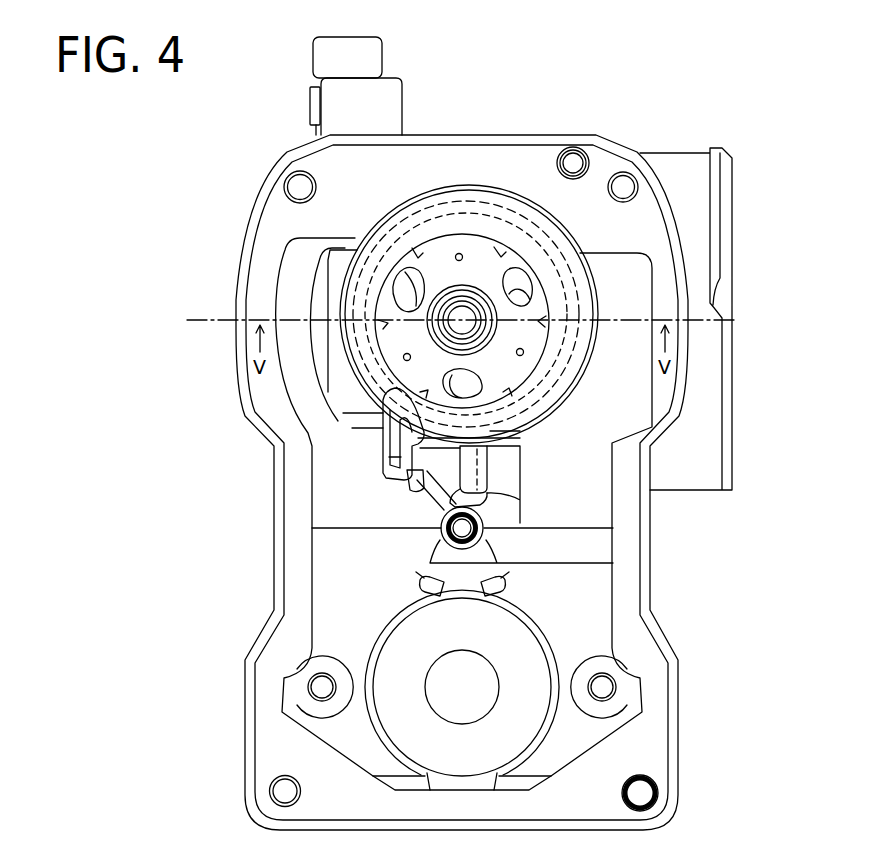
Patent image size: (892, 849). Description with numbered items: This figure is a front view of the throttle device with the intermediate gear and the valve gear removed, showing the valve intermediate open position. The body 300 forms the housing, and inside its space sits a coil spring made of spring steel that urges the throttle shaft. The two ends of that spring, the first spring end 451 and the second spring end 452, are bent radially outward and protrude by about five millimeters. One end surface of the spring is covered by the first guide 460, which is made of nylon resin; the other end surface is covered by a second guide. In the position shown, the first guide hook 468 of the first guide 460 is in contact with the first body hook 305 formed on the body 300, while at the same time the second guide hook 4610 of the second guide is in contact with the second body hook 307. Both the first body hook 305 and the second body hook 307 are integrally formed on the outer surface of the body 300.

The body 300 is at (648, 553).
The first body hook 305 is at (440, 512).
The second body hook 307 is at (455, 506).
The first spring end 451 is at (385, 452).
The second spring end 452 is at (488, 472).
The first guide 460 is at (545, 262).
The first guide hook 468 is at (425, 482).
The second guide hook 4610 is at (490, 500).